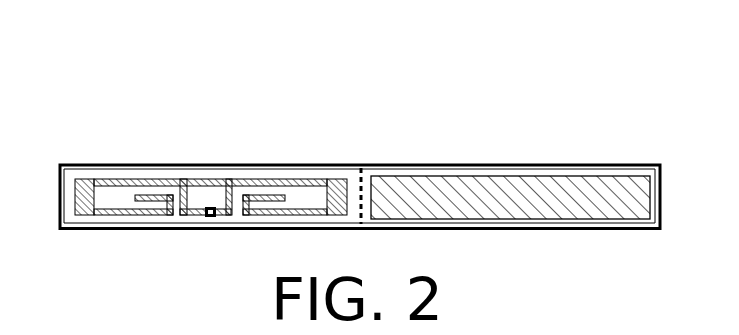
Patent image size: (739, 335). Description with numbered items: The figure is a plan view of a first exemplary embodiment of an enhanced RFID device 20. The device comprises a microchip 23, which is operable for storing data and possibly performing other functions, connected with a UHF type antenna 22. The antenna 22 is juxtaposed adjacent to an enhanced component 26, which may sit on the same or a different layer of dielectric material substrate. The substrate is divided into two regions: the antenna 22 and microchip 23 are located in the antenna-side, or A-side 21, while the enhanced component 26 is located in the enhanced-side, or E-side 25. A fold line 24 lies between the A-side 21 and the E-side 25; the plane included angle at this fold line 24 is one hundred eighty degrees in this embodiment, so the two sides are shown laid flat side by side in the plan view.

The enhanced RFID device 20 is at (92, 85).
The antenna-side (A-side) 21 is at (292, 172).
The UHF type antenna 22 is at (133, 180).
The microchip 23 is at (211, 207).
The fold line 24 is at (367, 170).
The enhanced-side (E-side) 25 is at (423, 170).
The enhanced component 26 is at (532, 185).